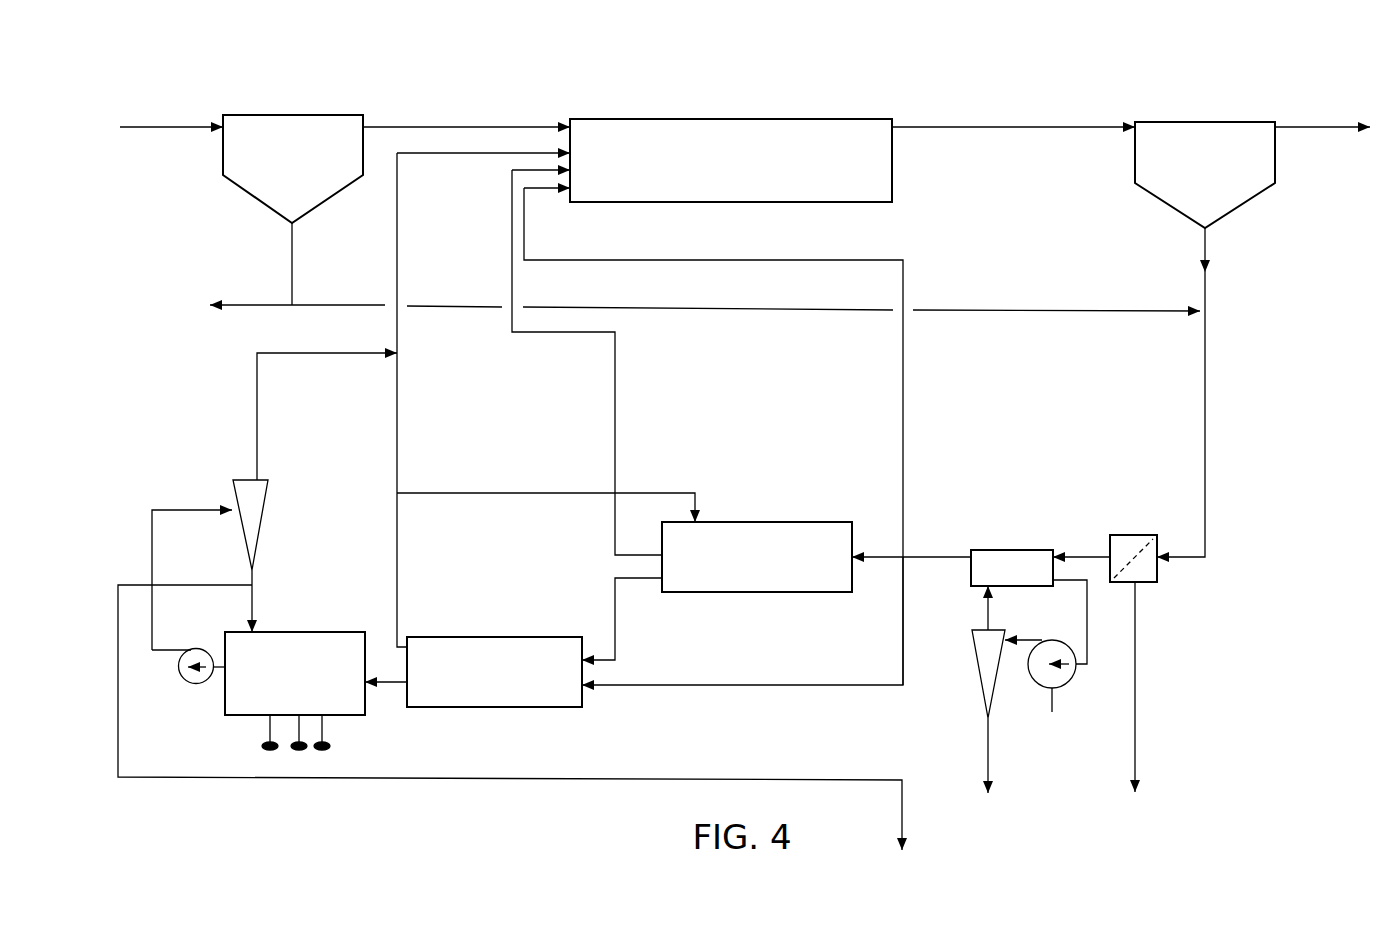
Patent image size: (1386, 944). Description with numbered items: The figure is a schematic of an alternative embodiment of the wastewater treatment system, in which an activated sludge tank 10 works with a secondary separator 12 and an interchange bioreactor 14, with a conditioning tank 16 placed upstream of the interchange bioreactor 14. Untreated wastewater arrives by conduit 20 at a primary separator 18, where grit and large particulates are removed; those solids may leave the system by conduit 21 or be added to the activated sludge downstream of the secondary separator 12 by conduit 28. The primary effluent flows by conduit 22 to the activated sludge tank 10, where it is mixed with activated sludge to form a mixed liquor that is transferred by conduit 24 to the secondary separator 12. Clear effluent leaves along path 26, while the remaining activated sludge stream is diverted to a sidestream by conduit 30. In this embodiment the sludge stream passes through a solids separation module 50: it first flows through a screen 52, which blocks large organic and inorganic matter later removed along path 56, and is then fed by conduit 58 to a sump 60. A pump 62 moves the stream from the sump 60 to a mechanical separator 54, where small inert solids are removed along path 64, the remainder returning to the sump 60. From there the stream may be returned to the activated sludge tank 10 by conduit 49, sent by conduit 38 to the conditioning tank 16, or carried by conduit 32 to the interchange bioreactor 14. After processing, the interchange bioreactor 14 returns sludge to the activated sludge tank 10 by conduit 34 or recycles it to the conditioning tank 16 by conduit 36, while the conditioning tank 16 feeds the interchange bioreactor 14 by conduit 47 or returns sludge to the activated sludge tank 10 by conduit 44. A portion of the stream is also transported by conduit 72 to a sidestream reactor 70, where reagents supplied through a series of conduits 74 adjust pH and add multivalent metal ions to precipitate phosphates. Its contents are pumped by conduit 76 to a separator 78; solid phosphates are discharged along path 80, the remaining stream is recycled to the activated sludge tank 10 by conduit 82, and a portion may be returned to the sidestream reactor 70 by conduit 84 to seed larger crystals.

The activated sludge tank 10 is at (720, 119).
The secondary separator 12 is at (1205, 122).
The interchange bioreactor 14 is at (498, 637).
The conditioning tank 16 is at (772, 522).
The primary separator 18 is at (292, 115).
The conduit 20 is at (165, 136).
The conduit 21 is at (245, 314).
The conduit 22 is at (467, 136).
The conduit 24 is at (1007, 136).
The path 26 is at (1310, 136).
The conduit 28 is at (338, 314).
The conduit 30 is at (1196, 253).
The conduit 32 is at (892, 593).
The conduit 34 is at (408, 470).
The conduit 36 is at (513, 502).
The conduit 38 is at (878, 566).
The conduit 44 is at (604, 403).
The conduit 47 is at (604, 625).
The conduit 49 is at (892, 417).
The solids separation module 50 is at (1192, 678).
The screen 52 is at (1133, 535).
The mechanical separator 54 is at (972, 640).
The path 56 is at (1124, 617).
The conduit 58 is at (1088, 566).
The sump 60 is at (1018, 550).
The pump 62 is at (1046, 662).
The path 64 is at (1000, 753).
The sidestream reactor 70 is at (329, 632).
The conduit 72 is at (384, 673).
The conduits 74 is at (348, 740).
The conduit 76 is at (141, 562).
The separator 78 is at (260, 540).
The path 80 is at (107, 715).
The conduit 82 is at (268, 410).
The conduit 84 is at (241, 607).